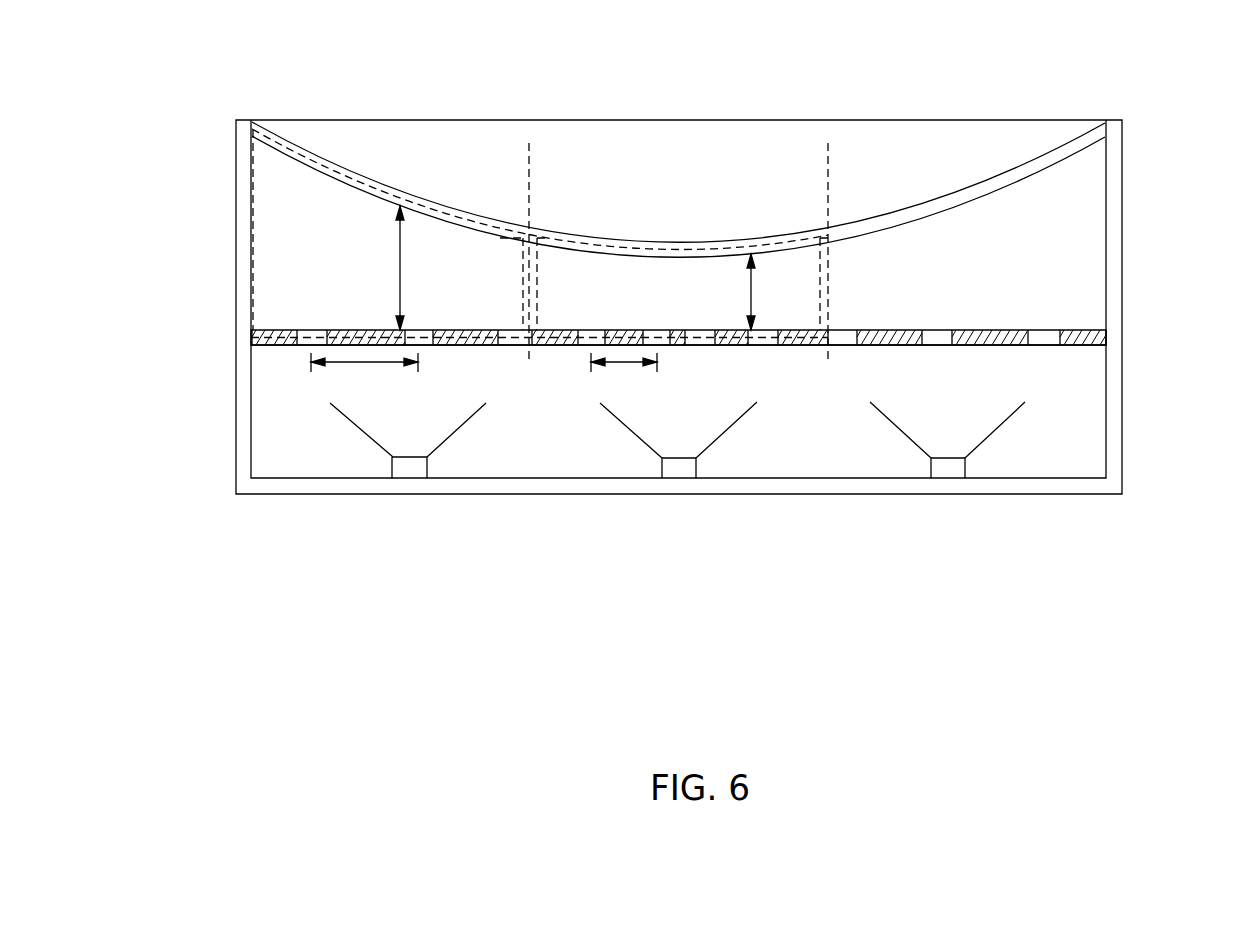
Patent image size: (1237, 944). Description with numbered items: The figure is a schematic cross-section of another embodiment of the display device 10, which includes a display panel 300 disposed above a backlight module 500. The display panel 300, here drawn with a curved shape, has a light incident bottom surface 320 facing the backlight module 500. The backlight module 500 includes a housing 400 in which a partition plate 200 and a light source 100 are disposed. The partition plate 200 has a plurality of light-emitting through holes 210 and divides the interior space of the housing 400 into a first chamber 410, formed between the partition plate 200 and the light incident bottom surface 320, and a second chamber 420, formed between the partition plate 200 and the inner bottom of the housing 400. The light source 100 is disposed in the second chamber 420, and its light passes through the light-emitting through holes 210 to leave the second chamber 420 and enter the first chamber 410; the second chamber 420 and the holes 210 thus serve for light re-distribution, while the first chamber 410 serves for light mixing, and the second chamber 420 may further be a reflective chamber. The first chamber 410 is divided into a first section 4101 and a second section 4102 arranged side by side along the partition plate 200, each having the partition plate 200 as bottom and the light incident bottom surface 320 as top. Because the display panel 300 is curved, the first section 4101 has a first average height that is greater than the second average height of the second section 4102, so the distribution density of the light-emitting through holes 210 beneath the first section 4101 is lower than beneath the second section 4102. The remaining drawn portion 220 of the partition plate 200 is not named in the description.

The display device 10 is at (213, 99).
The light source 100 is at (950, 468).
The partition plate 200 is at (997, 330).
The light-emitting through holes 210 is at (1047, 329).
The transmissive portion 220 is at (1017, 345).
The display panel 300 is at (1083, 138).
The light incident bottom surface 320 is at (1023, 180).
The housing 400 is at (731, 212).
The first chamber 410 is at (1085, 257).
The second chamber 420 is at (1080, 431).
The first section 4101 is at (345, 176).
The second section 4102 is at (582, 243).
The backlight module 500 is at (248, 384).